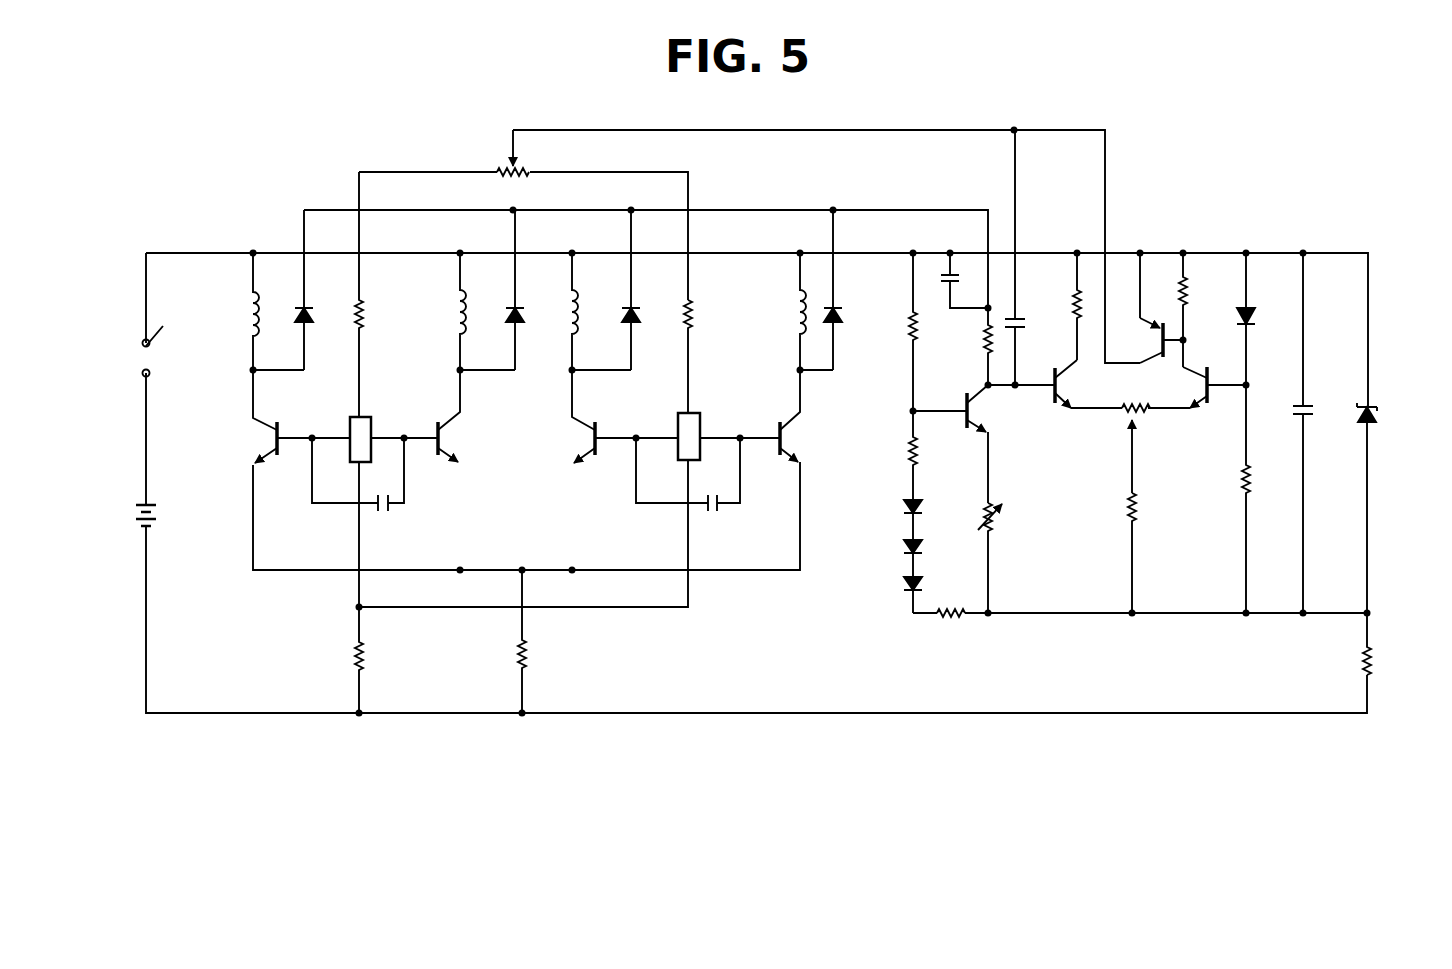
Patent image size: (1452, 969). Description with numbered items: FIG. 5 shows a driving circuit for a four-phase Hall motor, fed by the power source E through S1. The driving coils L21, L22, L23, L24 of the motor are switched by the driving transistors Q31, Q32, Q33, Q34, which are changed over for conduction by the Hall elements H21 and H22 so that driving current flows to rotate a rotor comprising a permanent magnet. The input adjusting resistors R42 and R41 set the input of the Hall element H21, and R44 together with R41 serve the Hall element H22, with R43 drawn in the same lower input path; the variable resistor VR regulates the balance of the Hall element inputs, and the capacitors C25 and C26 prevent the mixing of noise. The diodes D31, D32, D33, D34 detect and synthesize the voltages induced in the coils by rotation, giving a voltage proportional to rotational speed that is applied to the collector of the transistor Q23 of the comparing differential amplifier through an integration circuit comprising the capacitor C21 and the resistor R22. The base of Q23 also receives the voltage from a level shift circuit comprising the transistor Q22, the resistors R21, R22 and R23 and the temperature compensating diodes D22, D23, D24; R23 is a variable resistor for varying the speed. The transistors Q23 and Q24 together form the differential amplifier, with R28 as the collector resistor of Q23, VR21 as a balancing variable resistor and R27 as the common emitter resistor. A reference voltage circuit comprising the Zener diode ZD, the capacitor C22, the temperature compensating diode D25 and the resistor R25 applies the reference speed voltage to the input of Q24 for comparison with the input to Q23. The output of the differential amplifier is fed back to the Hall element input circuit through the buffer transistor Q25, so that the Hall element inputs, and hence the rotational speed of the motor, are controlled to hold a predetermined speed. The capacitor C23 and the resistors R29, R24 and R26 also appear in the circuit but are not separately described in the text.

The power switch S1 is at (160, 353).
The power source E is at (158, 515).
The driving coil L21 is at (248, 320).
The driving coil L22 is at (454, 330).
The driving coil L23 is at (572, 324).
The driving coil L24 is at (798, 324).
The diode D31 is at (307, 308).
The diode D32 is at (518, 308).
The diode D33 is at (634, 308).
The diode D34 is at (836, 308).
The input adjusting resistor R42 is at (365, 316).
The input adjusting resistor R44 is at (694, 312).
The input adjusting resistor R41 is at (365, 654).
The resistor R43 is at (528, 652).
The Hall element H21 is at (354, 418).
The Hall element H22 is at (692, 413).
The driving transistor Q31 is at (272, 438).
The driving transistor Q32 is at (450, 433).
The driving transistor Q33 is at (584, 455).
The driving transistor Q34 is at (792, 434).
The capacitor C25 is at (392, 505).
The capacitor C26 is at (722, 505).
The variable resistor VR is at (520, 164).
The voltage dividing resistor R21 is at (909, 321).
The capacitor C21 is at (938, 290).
The resistor R22 is at (986, 344).
The capacitor C23 is at (1020, 330).
The resistor R29 is at (1072, 303).
The transistor Q22 is at (975, 412).
The transistor Q23 is at (1074, 414).
The transistor Q24 is at (1205, 347).
The buffer transistor Q25 is at (1170, 362).
The variable resistor R23 is at (996, 520).
The resistor R24 is at (951, 613).
The temperature compensating diode D22 is at (900, 507).
The temperature compensating diode D23 is at (900, 547).
The temperature compensating diode D24 is at (900, 584).
The temperature compensating diode D25 is at (1250, 306).
The collector resistor R28 is at (1189, 292).
The balancing variable resistor VR21 is at (1140, 418).
The common emitter resistor R27 is at (1138, 512).
The resistor R25 is at (1240, 492).
The capacitor C22 is at (1310, 410).
The Zener diode ZD is at (1378, 412).
The resistor R26 is at (1362, 661).